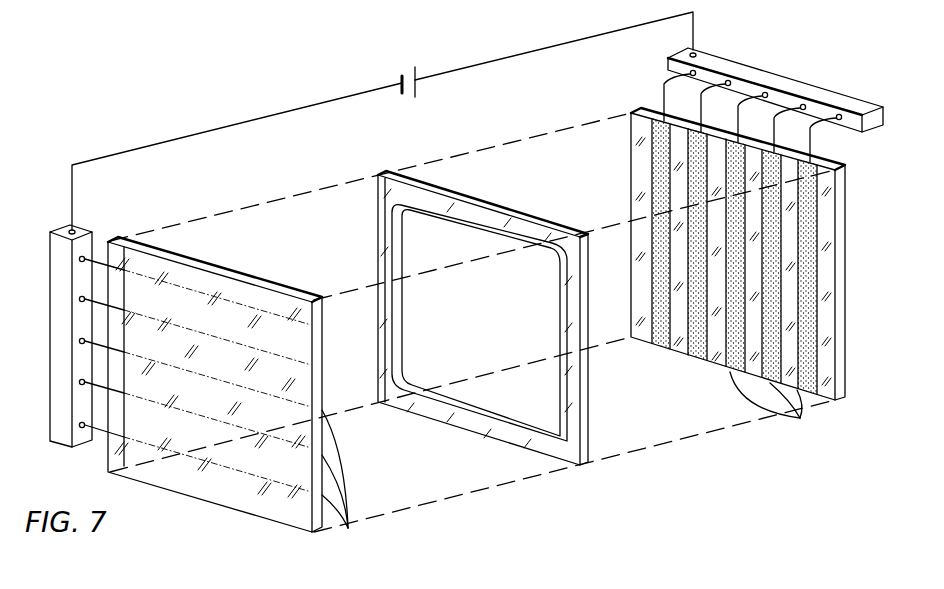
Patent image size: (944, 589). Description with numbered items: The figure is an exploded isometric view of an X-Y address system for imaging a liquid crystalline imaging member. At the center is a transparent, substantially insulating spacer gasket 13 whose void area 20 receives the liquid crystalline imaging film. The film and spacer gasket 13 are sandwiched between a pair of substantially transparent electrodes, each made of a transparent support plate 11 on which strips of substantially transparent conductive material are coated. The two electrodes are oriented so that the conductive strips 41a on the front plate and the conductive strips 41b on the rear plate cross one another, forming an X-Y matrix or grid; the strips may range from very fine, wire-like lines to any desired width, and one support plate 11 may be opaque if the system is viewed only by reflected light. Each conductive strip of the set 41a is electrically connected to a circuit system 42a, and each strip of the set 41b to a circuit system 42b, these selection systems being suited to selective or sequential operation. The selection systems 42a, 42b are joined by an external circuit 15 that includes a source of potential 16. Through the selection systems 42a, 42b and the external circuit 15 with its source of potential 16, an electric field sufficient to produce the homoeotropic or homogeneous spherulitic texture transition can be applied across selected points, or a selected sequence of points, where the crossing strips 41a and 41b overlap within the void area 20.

The transparent support plate 11 is at (124, 240).
The spacer gasket 13 is at (459, 306).
The external circuit 15 is at (386, 66).
The source of potential 16 is at (406, 95).
The void area 20 is at (479, 335).
The conductive strips 41a is at (350, 480).
The conductive strips 41b is at (779, 407).
The circuit system 42a is at (80, 448).
The circuit system 42b is at (705, 54).